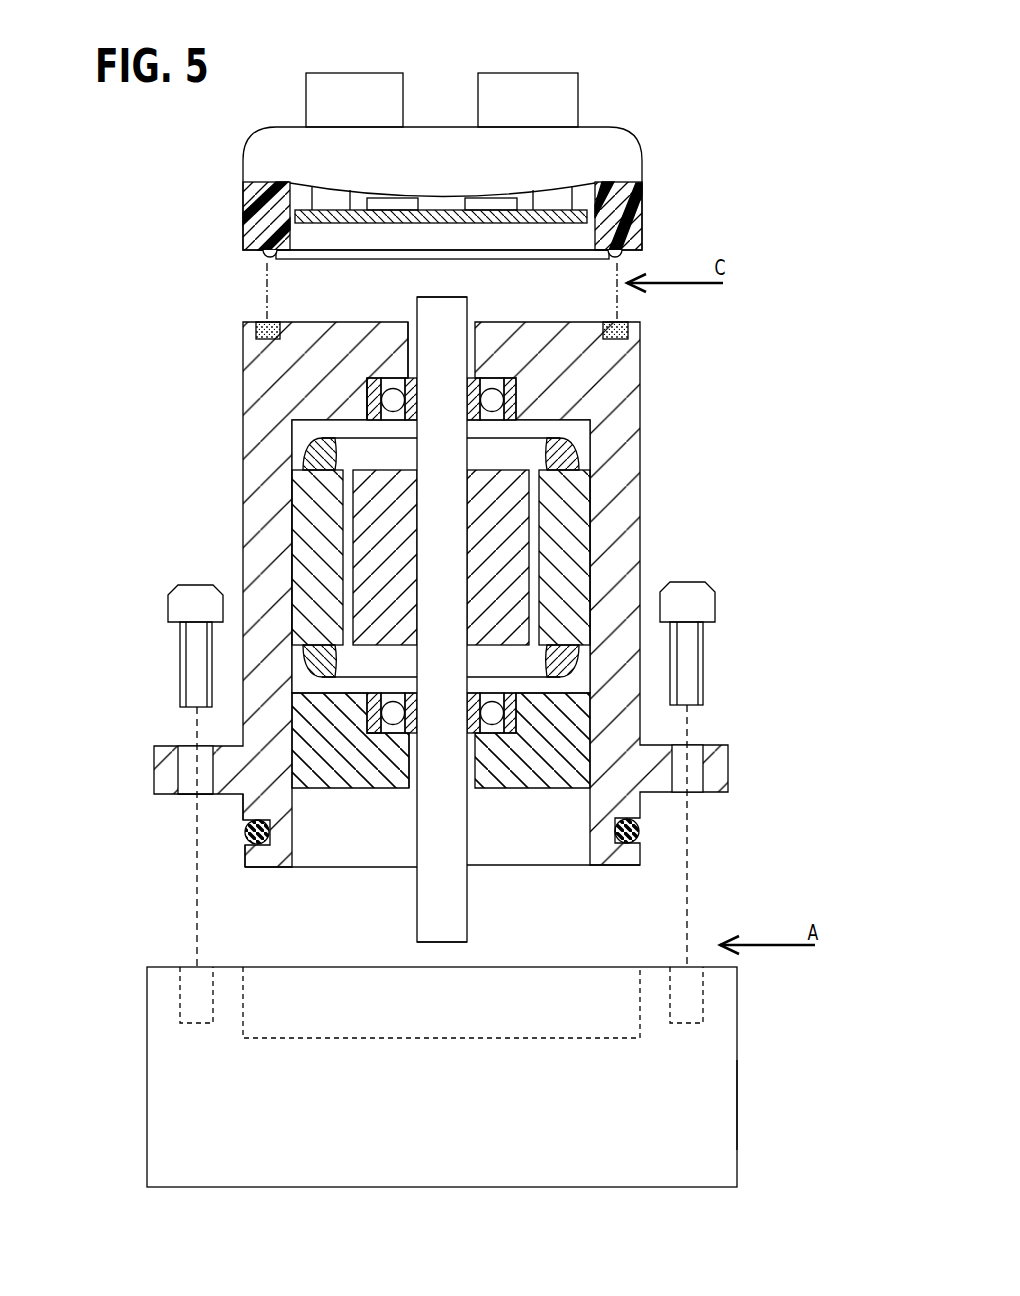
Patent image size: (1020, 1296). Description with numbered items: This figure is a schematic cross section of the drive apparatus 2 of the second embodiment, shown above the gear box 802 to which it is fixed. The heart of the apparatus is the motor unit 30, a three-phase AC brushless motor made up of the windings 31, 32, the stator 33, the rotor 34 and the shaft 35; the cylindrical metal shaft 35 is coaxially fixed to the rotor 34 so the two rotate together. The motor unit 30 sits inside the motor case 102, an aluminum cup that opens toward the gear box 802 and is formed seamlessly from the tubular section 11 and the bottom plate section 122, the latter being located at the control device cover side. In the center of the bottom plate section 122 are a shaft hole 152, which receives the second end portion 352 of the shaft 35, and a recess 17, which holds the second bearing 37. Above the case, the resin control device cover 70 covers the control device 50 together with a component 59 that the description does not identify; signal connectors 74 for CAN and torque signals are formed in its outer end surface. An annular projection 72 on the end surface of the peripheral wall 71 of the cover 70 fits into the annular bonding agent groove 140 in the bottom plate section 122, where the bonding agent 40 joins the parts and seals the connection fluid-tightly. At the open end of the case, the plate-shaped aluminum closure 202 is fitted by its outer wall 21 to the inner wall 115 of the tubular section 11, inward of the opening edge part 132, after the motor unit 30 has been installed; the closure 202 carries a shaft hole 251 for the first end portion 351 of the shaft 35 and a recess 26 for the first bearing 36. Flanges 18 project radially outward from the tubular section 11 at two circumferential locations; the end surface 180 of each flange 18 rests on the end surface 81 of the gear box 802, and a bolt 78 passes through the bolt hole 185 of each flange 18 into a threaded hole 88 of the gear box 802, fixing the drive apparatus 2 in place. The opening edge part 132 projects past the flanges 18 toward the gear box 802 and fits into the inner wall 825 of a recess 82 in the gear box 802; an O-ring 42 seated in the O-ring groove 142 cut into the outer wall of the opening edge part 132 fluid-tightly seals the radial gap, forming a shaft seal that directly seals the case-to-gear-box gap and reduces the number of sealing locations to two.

The drive apparatus 2 is at (628, 69).
The tubular section 11 is at (258, 517).
The recess 17 is at (378, 395).
The flange 18 is at (166, 781).
The outer wall 21 is at (295, 765).
The recess 26 is at (372, 735).
The motor unit 30 is at (722, 440).
The winding 31 is at (576, 450).
The winding 32 is at (441, 661).
The stator 33 is at (572, 479).
The rotor 34 is at (510, 512).
The shaft 35 is at (455, 545).
The first bearing 36 is at (502, 721).
The second bearing 37 is at (514, 394).
The bonding agent 40 is at (613, 325).
The O-ring 42 is at (639, 831).
The control device 50 is at (440, 196).
The circuit board 59 is at (595, 214).
The control device cover 70 is at (645, 141).
The peripheral wall 71 is at (250, 210).
The annular projection 72 is at (264, 261).
The signal connector 74 is at (327, 85).
The bolt 78 is at (193, 599).
The end surface 81 is at (657, 965).
The recess 82 is at (330, 998).
The threaded hole 88 is at (180, 990).
The motor case 102 is at (620, 415).
The inner wall 115 is at (305, 722).
The bottom plate section 122 is at (302, 382).
The opening edge part 132 is at (278, 858).
The bonding agent groove 140 is at (266, 324).
The O-ring groove 142 is at (247, 836).
The shaft hole 152 is at (410, 342).
The end surface 180 is at (708, 793).
The bolt hole 185 is at (188, 795).
The closure 202 is at (530, 780).
The shaft hole 251 is at (416, 772).
The first end portion 351 is at (455, 933).
The second end portion 352 is at (455, 307).
The gear box 802 is at (712, 1100).
The inner wall 825 is at (640, 1018).